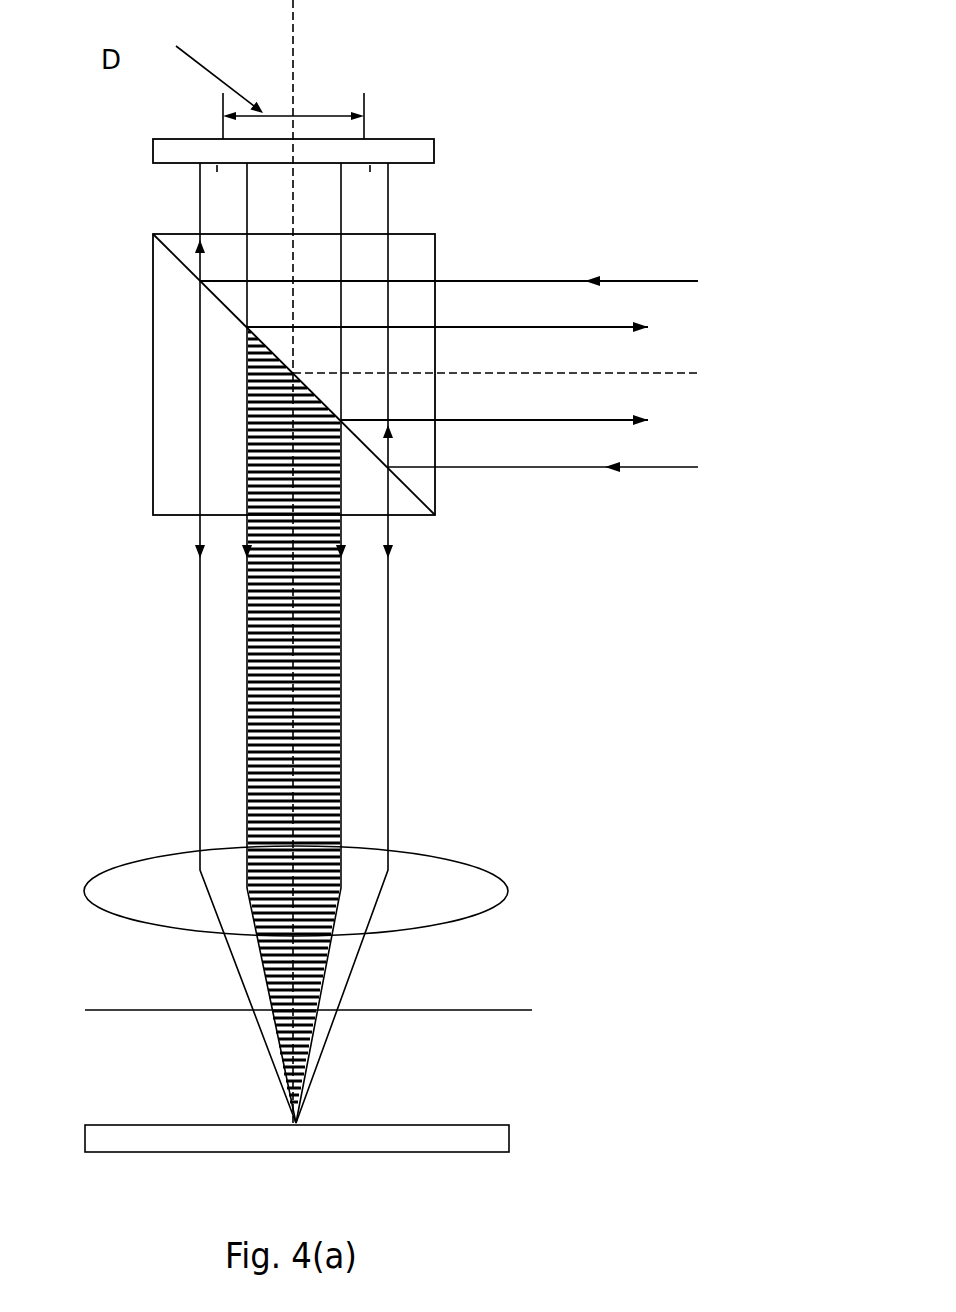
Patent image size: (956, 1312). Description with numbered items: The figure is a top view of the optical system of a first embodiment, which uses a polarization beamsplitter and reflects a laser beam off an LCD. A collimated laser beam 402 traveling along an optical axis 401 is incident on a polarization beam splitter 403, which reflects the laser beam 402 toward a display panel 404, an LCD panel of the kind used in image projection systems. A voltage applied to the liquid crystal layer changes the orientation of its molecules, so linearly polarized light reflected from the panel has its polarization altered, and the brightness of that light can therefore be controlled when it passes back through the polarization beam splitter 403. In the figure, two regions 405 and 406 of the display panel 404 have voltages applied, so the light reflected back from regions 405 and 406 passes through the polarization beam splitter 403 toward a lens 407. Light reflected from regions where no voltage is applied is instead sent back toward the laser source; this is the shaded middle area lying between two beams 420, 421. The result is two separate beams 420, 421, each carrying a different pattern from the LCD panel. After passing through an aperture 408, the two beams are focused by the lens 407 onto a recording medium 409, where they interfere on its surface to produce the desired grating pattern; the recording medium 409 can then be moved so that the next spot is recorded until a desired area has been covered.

The optical axis 401 is at (675, 373).
The collimated laser beam 402 is at (538, 273).
The polarization beam splitter 403 is at (153, 385).
The display panel 404 is at (440, 151).
The region of the liquid crystal display 405 is at (208, 167).
The region of the liquid crystal display 406 is at (379, 168).
The lens 407 is at (508, 880).
The aperture 408 is at (532, 1010).
The recording medium 409 is at (509, 1130).
The beam 420 is at (210, 712).
The beam 421 is at (372, 697).